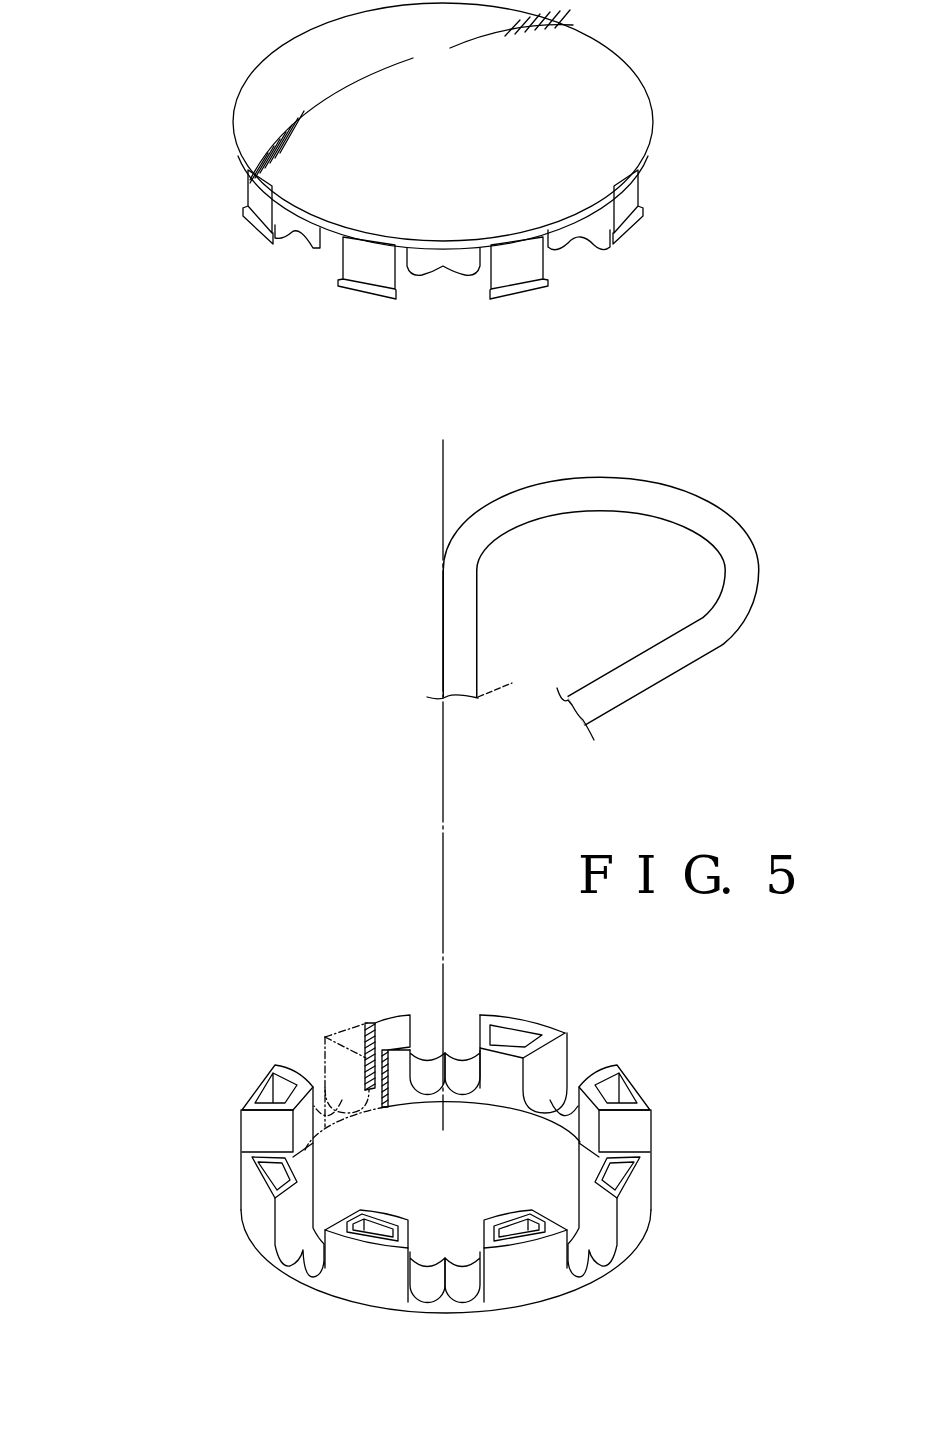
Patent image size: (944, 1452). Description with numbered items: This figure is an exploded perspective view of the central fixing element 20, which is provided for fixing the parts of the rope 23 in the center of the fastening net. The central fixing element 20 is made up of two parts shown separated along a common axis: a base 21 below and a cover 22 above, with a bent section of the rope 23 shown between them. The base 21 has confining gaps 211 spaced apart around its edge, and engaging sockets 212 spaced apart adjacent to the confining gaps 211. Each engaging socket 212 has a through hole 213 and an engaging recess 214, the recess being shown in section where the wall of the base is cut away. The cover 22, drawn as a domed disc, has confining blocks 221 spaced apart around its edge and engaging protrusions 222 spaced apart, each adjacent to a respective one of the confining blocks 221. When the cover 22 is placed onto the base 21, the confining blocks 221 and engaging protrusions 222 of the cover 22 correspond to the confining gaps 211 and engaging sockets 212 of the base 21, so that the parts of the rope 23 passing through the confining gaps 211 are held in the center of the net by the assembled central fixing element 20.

The central fixing element 20 is at (203, 1103).
The base 21 is at (459, 1126).
The confining gaps 211 is at (597, 1237).
The engaging sockets 212 is at (668, 1171).
The through hole 213 is at (622, 1168).
The engaging recess 214 is at (353, 1147).
The cover 22 is at (443, 185).
The confining blocks 221 is at (458, 263).
The engaging protrusions 222 is at (372, 273).
The rope 23 is at (677, 678).